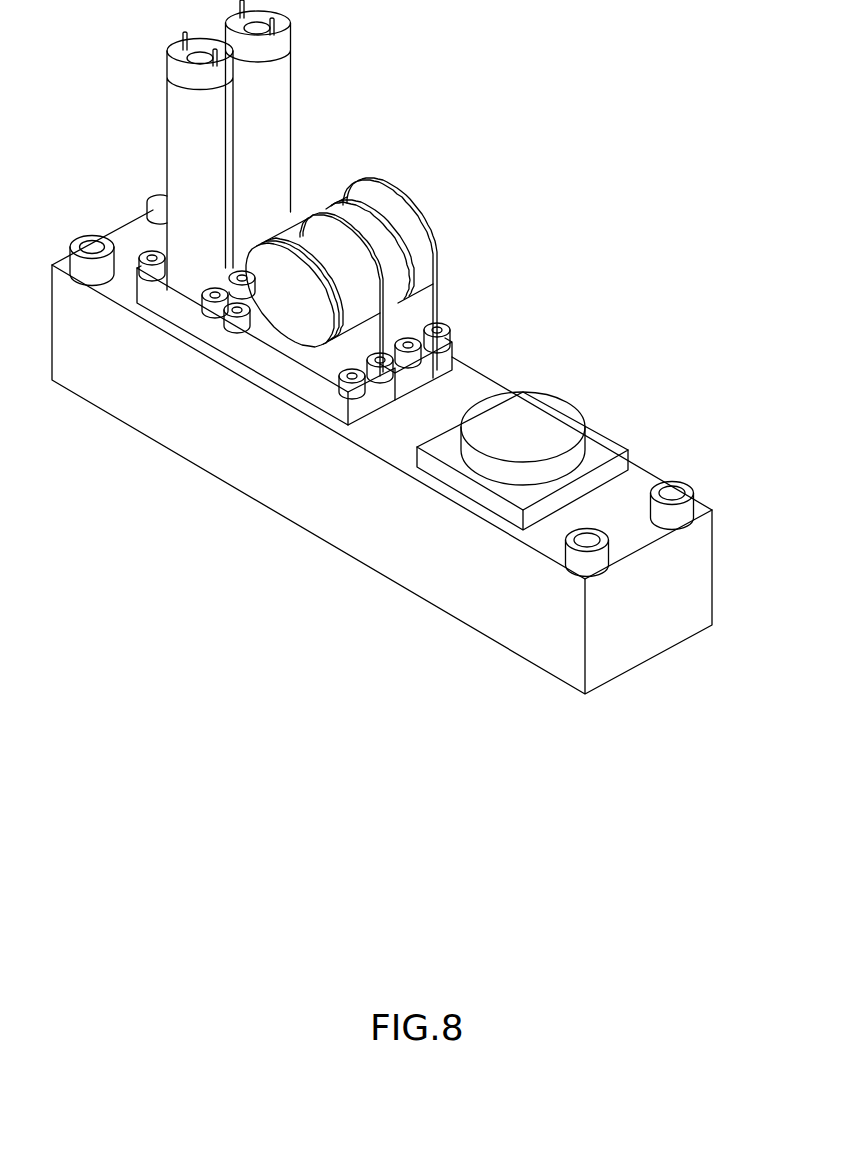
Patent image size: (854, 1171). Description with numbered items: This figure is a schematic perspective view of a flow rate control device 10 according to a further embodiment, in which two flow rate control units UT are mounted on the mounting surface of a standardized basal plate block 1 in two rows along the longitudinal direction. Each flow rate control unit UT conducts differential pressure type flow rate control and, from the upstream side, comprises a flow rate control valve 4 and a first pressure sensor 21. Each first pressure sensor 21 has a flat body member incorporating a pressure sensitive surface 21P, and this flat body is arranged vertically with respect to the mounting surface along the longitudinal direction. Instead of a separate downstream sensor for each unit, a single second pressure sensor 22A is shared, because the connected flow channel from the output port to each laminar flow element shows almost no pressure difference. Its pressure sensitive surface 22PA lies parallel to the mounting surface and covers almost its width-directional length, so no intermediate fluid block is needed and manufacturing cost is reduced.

The basal plate block 1 is at (135, 497).
The flow rate control valve 4 is at (293, 63).
The flow rate control device 10 is at (342, 231).
The first pressure sensor 21 is at (307, 212).
The pressure sensitive surface 21P is at (358, 217).
The second pressure sensor 22A is at (573, 392).
The pressure sensitive surface 22PA is at (462, 471).
The flow rate control unit UT is at (253, 413).